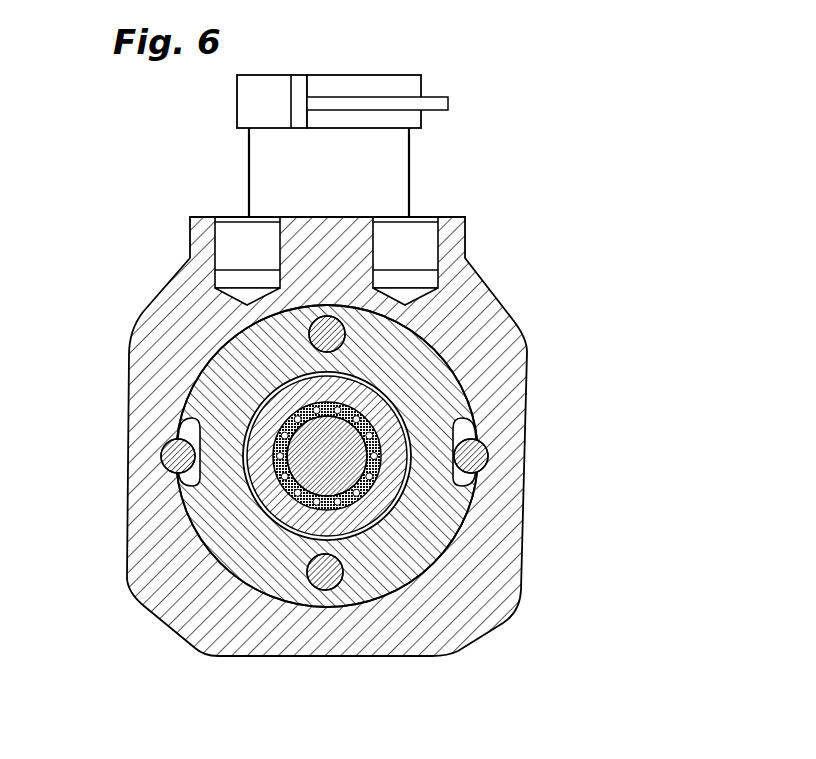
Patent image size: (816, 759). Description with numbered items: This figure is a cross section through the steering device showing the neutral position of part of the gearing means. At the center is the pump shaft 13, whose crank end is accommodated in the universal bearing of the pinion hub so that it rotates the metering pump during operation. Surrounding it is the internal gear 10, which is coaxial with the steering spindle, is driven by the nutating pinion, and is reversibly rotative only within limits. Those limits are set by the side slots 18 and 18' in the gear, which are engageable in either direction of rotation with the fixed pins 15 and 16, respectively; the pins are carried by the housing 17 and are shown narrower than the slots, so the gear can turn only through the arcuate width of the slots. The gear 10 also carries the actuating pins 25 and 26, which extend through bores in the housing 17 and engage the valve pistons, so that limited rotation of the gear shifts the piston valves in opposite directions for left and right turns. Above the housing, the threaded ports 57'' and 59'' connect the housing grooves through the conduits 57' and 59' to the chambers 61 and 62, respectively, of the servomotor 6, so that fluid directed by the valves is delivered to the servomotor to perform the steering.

The servomotor 6 is at (457, 48).
The internal gear 10 is at (412, 363).
The pump shaft 13 is at (327, 450).
The fixed pin 15 is at (166, 458).
The fixed pin 16 is at (490, 453).
The housing 17 is at (508, 487).
The side slot 18 is at (106, 475).
The side slot 18' is at (527, 488).
The actuating pin 25 is at (332, 326).
The actuating pin 26 is at (320, 583).
The conduit 57' is at (446, 172).
The threaded port 57'' is at (446, 261).
The conduit 59' is at (206, 172).
The threaded port 59'' is at (205, 261).
The chamber 61 is at (348, 88).
The chamber 62 is at (267, 94).